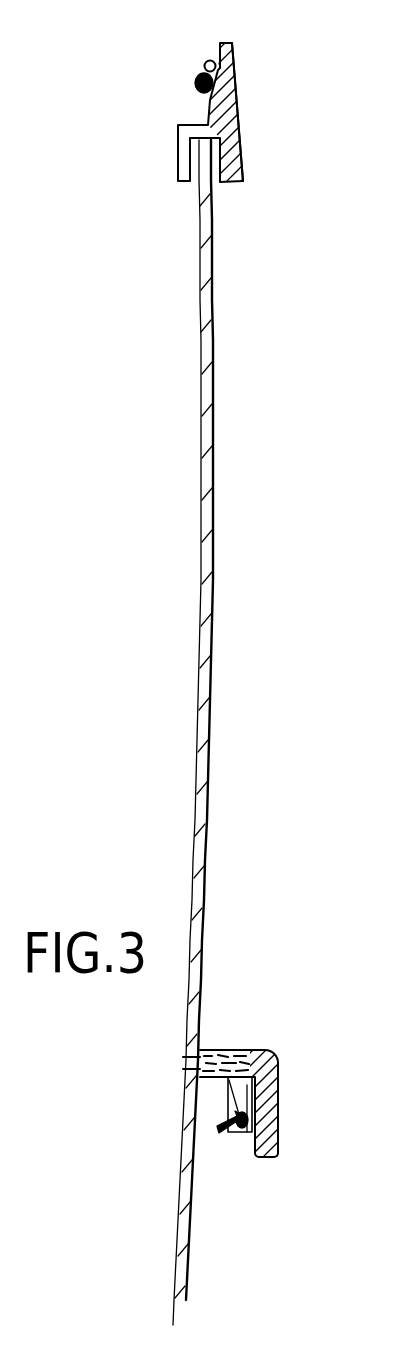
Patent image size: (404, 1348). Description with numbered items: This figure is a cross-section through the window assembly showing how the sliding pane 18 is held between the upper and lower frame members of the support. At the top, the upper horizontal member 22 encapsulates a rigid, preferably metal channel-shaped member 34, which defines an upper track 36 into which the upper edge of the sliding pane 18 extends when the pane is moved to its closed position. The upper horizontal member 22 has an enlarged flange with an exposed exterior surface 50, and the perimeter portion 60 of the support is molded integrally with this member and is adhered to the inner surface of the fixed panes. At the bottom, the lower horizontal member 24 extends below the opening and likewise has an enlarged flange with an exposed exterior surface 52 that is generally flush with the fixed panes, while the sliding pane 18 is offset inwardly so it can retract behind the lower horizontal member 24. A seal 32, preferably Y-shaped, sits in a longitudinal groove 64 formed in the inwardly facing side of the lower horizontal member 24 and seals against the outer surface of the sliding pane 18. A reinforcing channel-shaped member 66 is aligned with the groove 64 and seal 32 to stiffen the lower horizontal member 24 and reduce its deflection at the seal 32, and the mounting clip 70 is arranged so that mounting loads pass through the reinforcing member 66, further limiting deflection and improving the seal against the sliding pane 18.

The sliding pane 18 is at (213, 642).
The upper horizontal member 22 is at (203, 144).
The lower horizontal member 24 is at (262, 1093).
The seal 32 is at (205, 1043).
The channel-shaped member 34 is at (217, 95).
The upper track 36 is at (190, 193).
The exposed exterior surface 50 is at (240, 70).
The exposed exterior surface 52 is at (279, 1103).
The perimeter portion 60 is at (243, 107).
The groove 64 is at (217, 1047).
The channel-shaped member 66 is at (246, 1050).
The mounting clip 70 is at (222, 1133).